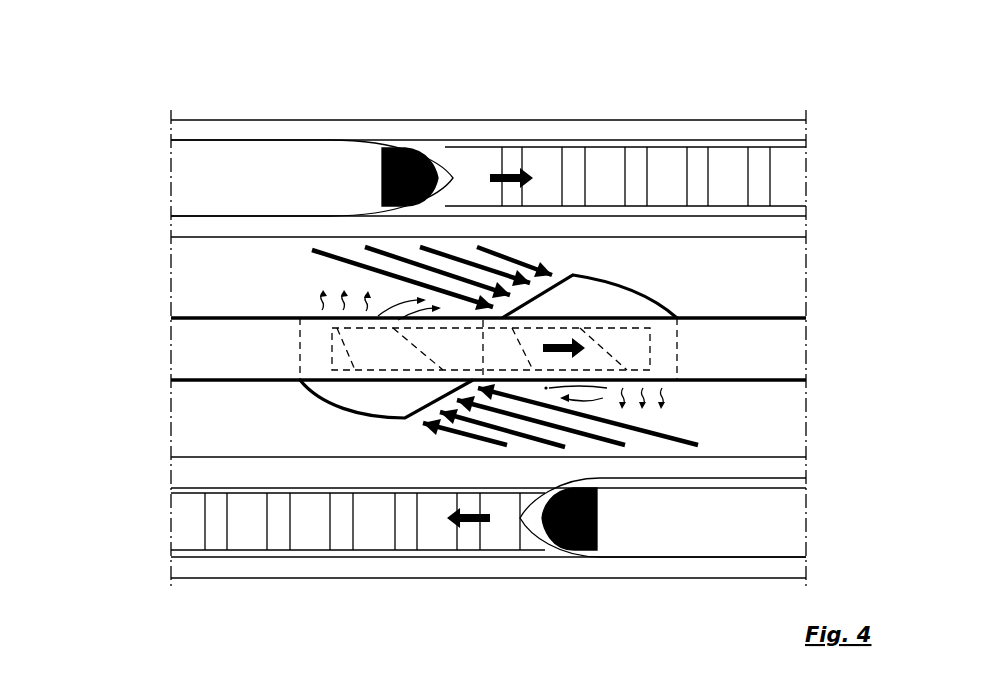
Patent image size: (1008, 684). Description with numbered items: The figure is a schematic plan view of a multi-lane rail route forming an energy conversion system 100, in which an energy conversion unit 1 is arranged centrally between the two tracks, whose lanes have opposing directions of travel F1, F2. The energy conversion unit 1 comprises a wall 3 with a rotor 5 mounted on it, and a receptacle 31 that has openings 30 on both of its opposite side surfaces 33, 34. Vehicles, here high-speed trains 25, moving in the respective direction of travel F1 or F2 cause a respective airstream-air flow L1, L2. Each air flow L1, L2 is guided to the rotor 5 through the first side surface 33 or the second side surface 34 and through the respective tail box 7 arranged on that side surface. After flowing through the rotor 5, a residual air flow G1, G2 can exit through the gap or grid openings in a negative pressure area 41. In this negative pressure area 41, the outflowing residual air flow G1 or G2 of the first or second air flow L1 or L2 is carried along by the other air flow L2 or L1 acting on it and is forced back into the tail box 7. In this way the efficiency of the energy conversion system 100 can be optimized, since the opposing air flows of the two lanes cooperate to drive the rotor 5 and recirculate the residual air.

The energy conversion system 100 is at (115, 148).
The energy conversion unit 1 is at (140, 390).
The wall 3 is at (488, 349).
The high-speed train 25 is at (488, 348).
The first direction of travel F1 is at (493, 172).
The second direction of travel F2 is at (472, 524).
The rotor 5 is at (637, 342).
The receptacle 31 is at (682, 358).
The opening 30 is at (596, 305).
The tail box 7 is at (342, 397).
The first side surface 33 is at (764, 308).
The second side surface 34 is at (764, 392).
The first air flow L1 is at (508, 256).
The second air flow L2 is at (492, 423).
The first residual air flow G1 is at (672, 400).
The second residual air flow G2 is at (352, 298).
The negative pressure area 41 is at (301, 317).